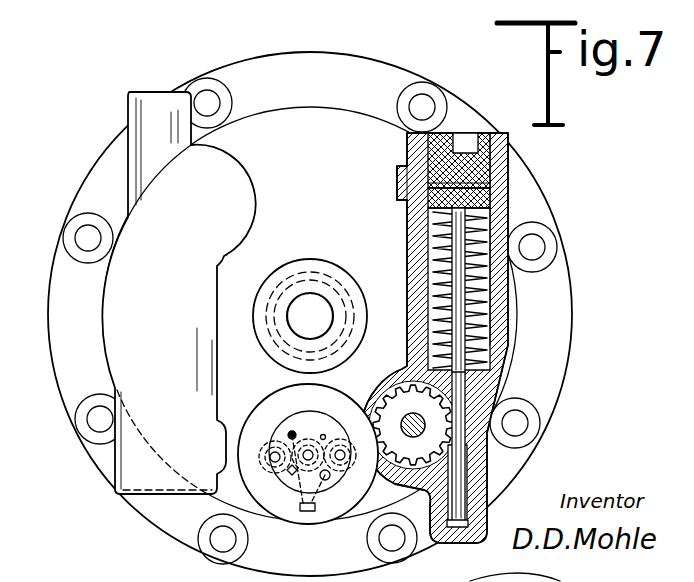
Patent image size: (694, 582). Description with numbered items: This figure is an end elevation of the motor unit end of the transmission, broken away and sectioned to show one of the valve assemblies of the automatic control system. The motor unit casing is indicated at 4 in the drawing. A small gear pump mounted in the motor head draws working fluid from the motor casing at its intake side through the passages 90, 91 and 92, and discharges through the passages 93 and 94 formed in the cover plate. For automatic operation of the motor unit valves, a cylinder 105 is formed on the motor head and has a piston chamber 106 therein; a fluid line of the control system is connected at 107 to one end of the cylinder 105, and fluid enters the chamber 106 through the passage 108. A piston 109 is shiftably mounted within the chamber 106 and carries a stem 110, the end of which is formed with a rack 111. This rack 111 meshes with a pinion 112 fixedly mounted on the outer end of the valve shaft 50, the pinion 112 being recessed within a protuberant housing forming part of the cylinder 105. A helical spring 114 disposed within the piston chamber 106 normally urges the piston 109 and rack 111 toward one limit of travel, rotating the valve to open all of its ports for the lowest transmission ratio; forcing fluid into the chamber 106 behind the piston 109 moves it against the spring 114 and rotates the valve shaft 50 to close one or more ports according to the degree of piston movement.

The shaft bearing 4 is at (300, 306).
The valve shaft 50 is at (423, 429).
The passage 90 is at (308, 512).
The passage 91 is at (289, 473).
The passage 92 is at (312, 512).
The passage 93 is at (292, 432).
The passage 94 is at (330, 478).
The cylinder 105 is at (140, 318).
The piston chamber 106 is at (427, 309).
The connection 107 is at (400, 186).
The passage 108 is at (447, 153).
The piston 109 is at (510, 203).
The stem 110 is at (464, 283).
The rack 111 is at (455, 394).
The pinion 112 is at (433, 420).
The helical spring 114 is at (447, 258).